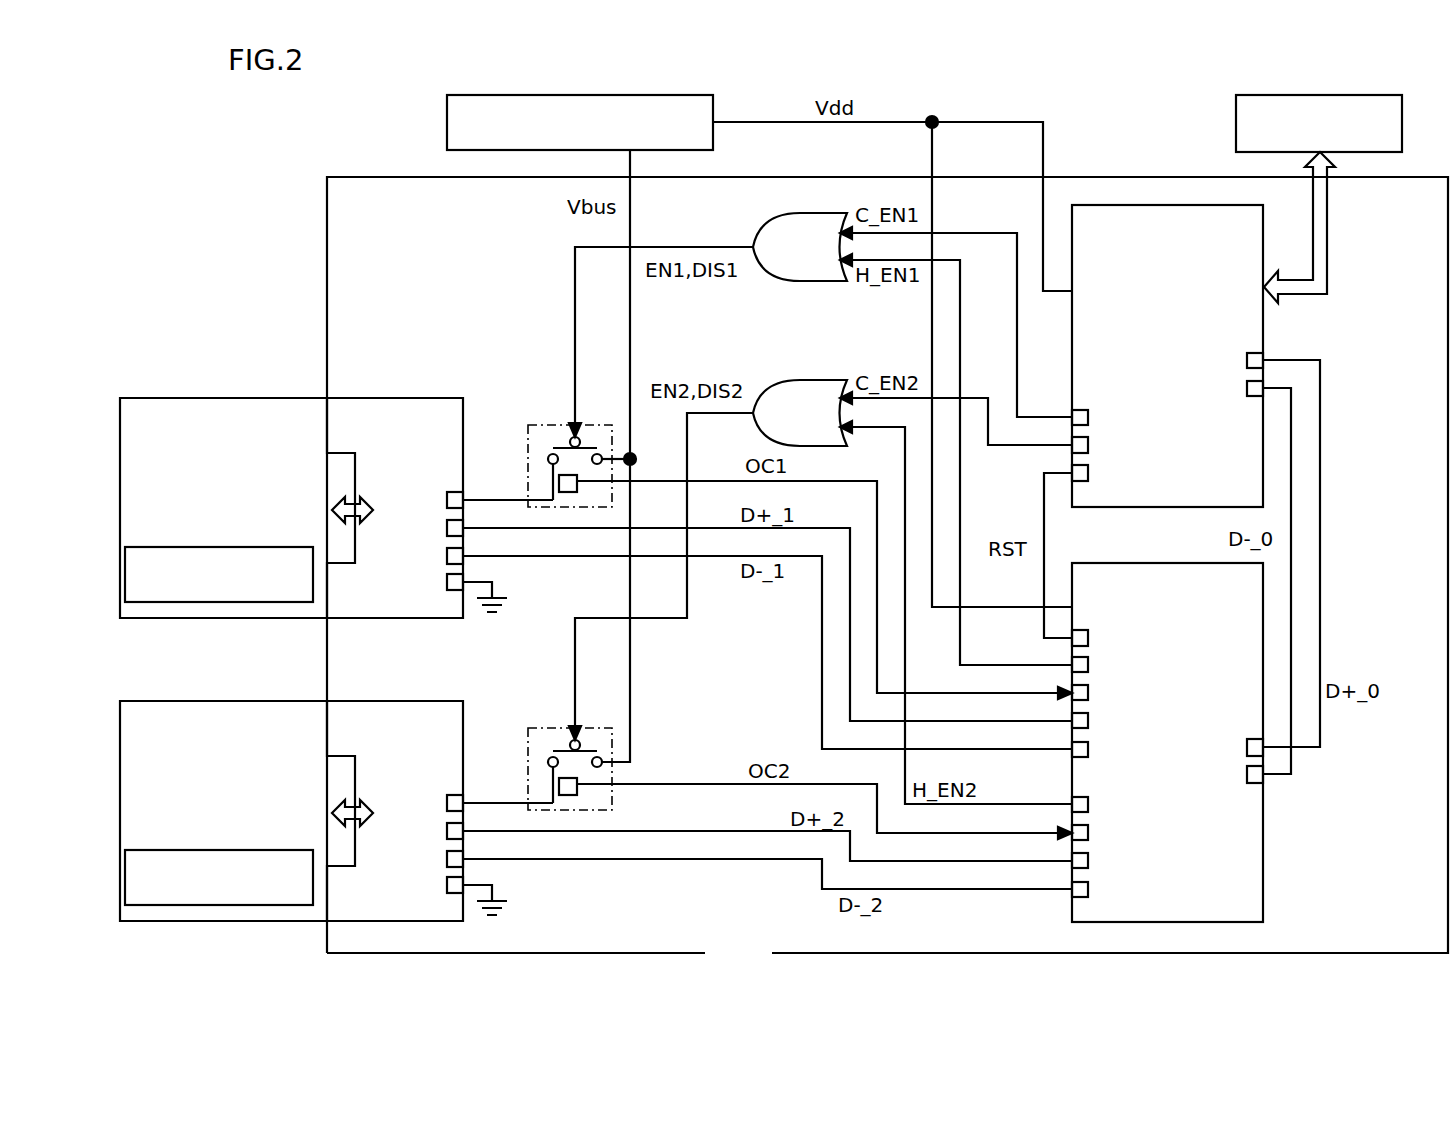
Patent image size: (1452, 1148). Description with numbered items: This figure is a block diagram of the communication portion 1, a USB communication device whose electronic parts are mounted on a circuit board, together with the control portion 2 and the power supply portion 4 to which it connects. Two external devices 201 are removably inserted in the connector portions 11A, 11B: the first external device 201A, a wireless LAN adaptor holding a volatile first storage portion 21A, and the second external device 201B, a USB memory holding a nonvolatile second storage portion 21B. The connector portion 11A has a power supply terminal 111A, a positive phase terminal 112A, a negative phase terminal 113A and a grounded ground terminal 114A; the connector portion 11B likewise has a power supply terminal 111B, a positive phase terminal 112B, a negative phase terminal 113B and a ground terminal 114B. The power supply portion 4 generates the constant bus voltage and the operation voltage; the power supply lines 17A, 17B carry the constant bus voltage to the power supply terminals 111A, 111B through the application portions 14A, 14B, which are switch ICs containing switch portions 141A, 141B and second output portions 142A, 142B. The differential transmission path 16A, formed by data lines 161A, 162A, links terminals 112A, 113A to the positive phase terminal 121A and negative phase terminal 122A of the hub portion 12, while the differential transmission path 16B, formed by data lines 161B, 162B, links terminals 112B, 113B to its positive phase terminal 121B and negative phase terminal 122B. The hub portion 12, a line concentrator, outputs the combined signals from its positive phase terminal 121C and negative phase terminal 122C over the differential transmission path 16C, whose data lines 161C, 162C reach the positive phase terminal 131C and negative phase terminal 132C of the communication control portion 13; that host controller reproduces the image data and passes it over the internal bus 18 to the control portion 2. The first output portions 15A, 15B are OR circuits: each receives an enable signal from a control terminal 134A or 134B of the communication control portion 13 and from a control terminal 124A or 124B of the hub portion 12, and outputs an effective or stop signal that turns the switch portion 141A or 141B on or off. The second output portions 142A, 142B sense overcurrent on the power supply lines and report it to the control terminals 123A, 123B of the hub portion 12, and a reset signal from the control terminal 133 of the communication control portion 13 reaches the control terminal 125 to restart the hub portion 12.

The communication portion 1 is at (404, 177).
The control portion 2 is at (1318, 95).
The power supply portion 4 is at (627, 95).
The connector portion 11A is at (400, 398).
The connector portion 11B is at (400, 701).
The hub portion 12 is at (1165, 563).
The communication control portion 13 is at (1165, 205).
The application portion 14A is at (597, 425).
The application portion 14B is at (597, 728).
The first output portion 15A is at (758, 230).
The first output portion 15B is at (800, 380).
The differential transmission path 16A is at (767, 638).
The differential transmission path 16B is at (767, 898).
The differential transmission path 16C is at (1345, 567).
The power supply line 17A is at (492, 499).
The power supply line 17B is at (492, 802).
The internal bus 18 is at (1327, 232).
The first storage portion 21A is at (230, 547).
The second storage portion 21B is at (233, 850).
The power supply terminal 111A is at (447, 496).
The positive phase terminal 112A is at (447, 524).
The negative phase terminal 113A is at (447, 554).
The ground terminal 114A is at (447, 580).
The power supply terminal 111B is at (447, 799).
The positive phase terminal 112B is at (447, 827).
The negative phase terminal 113B is at (447, 857).
The ground terminal 114B is at (447, 883).
The positive phase terminal 121A is at (1088, 728).
The negative phase terminal 122A is at (1088, 757).
The control terminal 123A is at (1088, 700).
The control terminal 124A is at (1088, 672).
The control terminal 125 is at (1088, 646).
The positive phase terminal 121B is at (1088, 868).
The negative phase terminal 122B is at (1088, 897).
The control terminal 123B is at (1088, 840).
The control terminal 124B is at (1088, 812).
The positive phase terminal 121C is at (1263, 756).
The negative phase terminal 122C is at (1255, 783).
The positive phase terminal 131C is at (1262, 353).
The negative phase terminal 132C is at (1262, 381).
The control terminal 133 is at (1088, 481).
The control terminal 134A is at (1088, 425).
The control terminal 134B is at (1088, 453).
The switch portion 141A is at (560, 425).
The switch portion 141B is at (560, 728).
The second output portion 142A is at (567, 493).
The second output portion 142B is at (567, 796).
The data line 161A is at (850, 688).
The data line 162A is at (822, 722).
The data line 161B is at (705, 832).
The data line 162B is at (673, 907).
The data line 161C is at (1320, 495).
The data line 162C is at (1291, 548).
The external device 201 is at (237, 480).
The first external device 201A is at (236, 398).
The second external device 201B is at (236, 701).